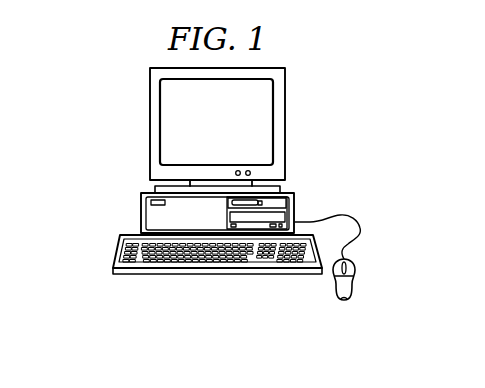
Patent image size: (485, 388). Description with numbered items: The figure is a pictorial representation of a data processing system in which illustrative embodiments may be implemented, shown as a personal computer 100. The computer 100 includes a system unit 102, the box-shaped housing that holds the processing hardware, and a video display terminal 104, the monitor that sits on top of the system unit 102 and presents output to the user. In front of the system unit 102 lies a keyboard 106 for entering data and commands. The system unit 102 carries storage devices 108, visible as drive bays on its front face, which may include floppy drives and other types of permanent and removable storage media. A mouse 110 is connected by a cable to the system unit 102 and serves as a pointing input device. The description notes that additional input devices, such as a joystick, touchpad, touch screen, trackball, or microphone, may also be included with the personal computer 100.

The computer 100 is at (90, 112).
The system unit 102 is at (140, 207).
The video display terminal 104 is at (287, 125).
The keyboard 106 is at (217, 278).
The storage devices 108 is at (295, 206).
The mouse 110 is at (355, 285).